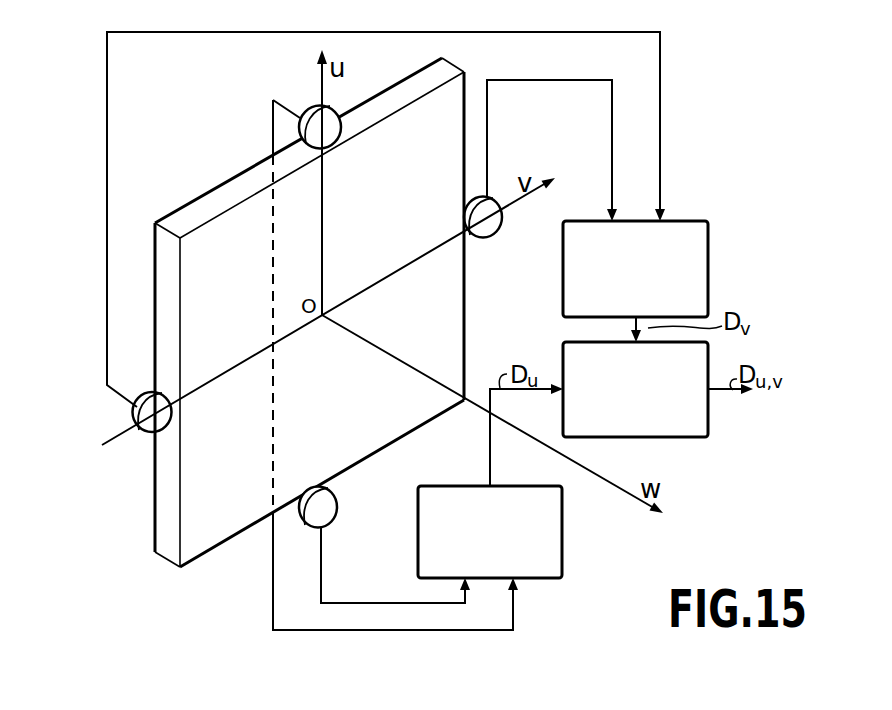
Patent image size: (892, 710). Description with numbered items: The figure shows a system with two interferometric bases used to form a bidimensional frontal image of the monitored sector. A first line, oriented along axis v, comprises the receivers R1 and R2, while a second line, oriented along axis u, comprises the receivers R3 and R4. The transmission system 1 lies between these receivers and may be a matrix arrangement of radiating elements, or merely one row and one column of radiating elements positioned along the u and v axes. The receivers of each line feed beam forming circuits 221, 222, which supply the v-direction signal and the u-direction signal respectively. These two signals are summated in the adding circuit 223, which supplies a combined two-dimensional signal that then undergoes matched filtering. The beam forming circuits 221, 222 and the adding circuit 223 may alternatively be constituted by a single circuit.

The transmission system 1 is at (198, 196).
The receiver R1 is at (143, 434).
The receiver R2 is at (490, 238).
The receiver R3 is at (347, 512).
The receiver R4 is at (312, 104).
The beam forming circuit 221 is at (690, 221).
The beam forming circuit 222 is at (562, 558).
The adding circuit 223 is at (690, 438).